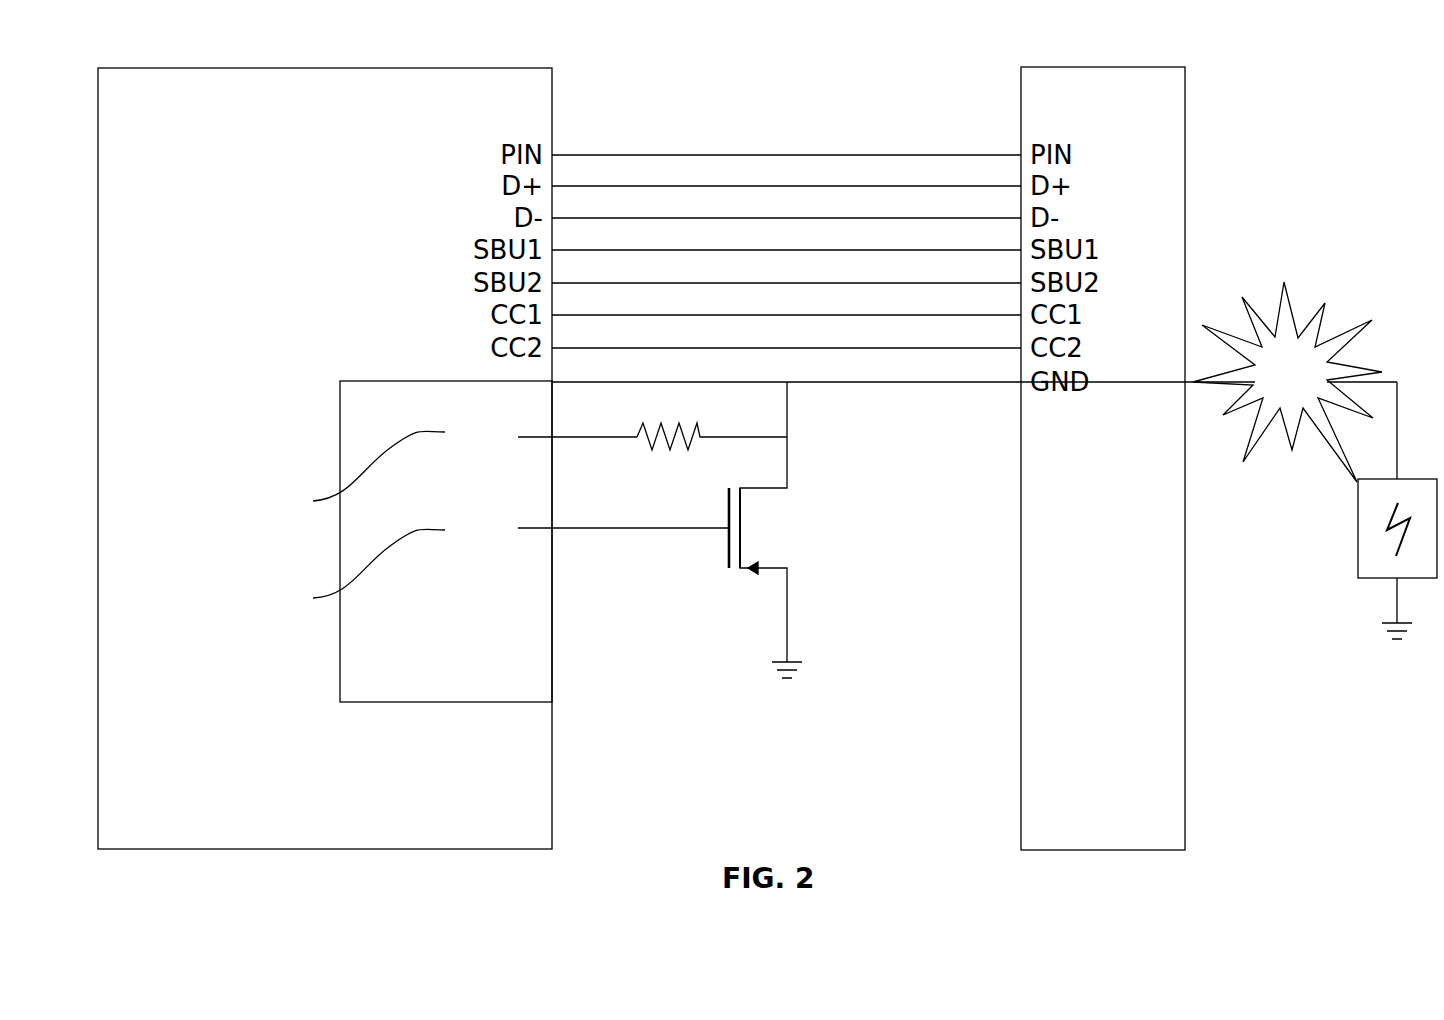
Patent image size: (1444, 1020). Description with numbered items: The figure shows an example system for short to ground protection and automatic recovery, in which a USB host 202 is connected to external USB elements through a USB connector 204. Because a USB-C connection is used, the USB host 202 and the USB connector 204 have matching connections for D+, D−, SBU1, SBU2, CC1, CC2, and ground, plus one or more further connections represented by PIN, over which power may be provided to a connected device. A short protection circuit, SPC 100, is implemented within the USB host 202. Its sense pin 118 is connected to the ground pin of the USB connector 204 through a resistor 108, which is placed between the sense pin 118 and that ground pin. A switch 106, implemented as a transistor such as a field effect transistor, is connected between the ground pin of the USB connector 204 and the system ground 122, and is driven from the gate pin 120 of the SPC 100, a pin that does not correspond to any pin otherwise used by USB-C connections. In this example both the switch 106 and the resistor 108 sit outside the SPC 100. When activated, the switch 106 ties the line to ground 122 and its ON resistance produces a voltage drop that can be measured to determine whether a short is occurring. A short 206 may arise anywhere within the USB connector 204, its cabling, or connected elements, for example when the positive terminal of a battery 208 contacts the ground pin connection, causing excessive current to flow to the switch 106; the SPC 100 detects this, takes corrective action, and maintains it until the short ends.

The SPC 100 is at (403, 381).
The switch 106 is at (785, 522).
The resistor 108 is at (663, 458).
The sense pin 118 is at (358, 473).
The gate pin 120 is at (358, 571).
The ground 122 is at (791, 700).
The USB host 202 is at (166, 68).
The USB connector 204 is at (1089, 67).
The short 206 is at (1352, 326).
The battery 208 is at (1356, 527).